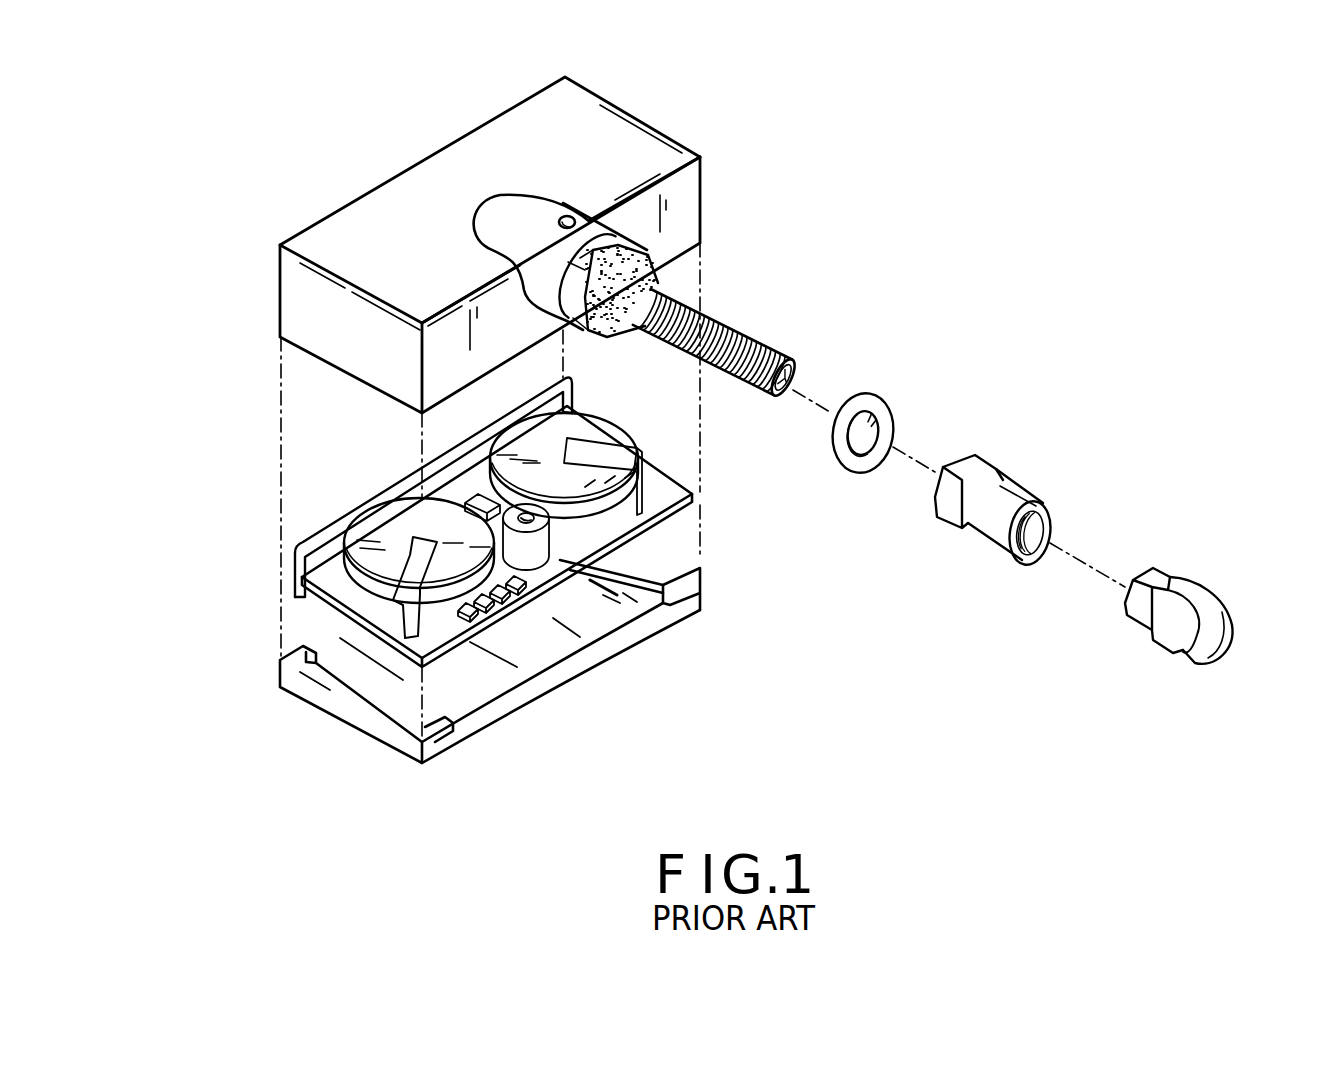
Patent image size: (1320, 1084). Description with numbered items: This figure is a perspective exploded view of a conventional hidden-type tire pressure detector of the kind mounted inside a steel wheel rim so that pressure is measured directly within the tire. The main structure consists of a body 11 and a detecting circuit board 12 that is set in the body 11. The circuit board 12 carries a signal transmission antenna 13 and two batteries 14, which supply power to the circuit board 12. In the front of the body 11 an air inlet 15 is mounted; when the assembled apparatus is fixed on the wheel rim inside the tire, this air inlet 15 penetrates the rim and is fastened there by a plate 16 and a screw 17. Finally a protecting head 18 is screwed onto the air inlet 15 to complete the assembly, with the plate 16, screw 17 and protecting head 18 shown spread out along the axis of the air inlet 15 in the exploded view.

The body 11 is at (222, 675).
The detecting circuit board 12 is at (547, 567).
The signal transmission antenna 13 is at (385, 490).
The batteries 14 is at (380, 560).
The air inlet 15 is at (738, 337).
The plate 16 is at (883, 407).
The screw 17 is at (1000, 497).
The protecting head 18 is at (1177, 607).